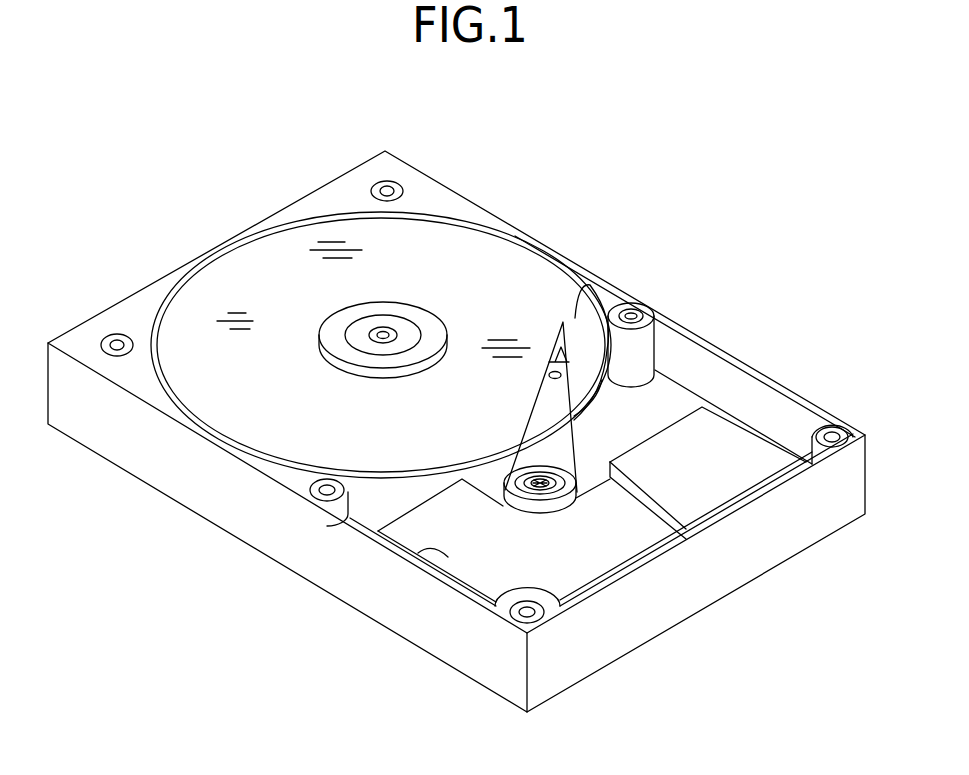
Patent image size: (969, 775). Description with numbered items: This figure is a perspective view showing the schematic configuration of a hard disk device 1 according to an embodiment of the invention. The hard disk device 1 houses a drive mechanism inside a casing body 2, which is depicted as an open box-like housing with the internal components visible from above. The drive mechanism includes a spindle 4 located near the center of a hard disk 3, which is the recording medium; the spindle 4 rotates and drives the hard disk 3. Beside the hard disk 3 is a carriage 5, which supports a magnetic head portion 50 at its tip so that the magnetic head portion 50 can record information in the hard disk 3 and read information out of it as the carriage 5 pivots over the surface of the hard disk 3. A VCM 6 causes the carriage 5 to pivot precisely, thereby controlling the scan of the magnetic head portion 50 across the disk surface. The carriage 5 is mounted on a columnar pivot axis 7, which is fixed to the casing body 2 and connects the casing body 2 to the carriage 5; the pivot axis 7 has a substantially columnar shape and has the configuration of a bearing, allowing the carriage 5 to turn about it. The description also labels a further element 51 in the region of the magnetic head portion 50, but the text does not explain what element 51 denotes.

The hard disk device 1 is at (749, 181).
The casing body 2 is at (245, 520).
The hard disk 3 is at (513, 265).
The spindle 4 is at (360, 332).
The carriage 5 is at (569, 431).
The VCM 6 is at (406, 567).
The pivot axis 7 is at (518, 490).
The magnetic head portion 50 is at (553, 340).
The magnetic head 51 is at (558, 393).